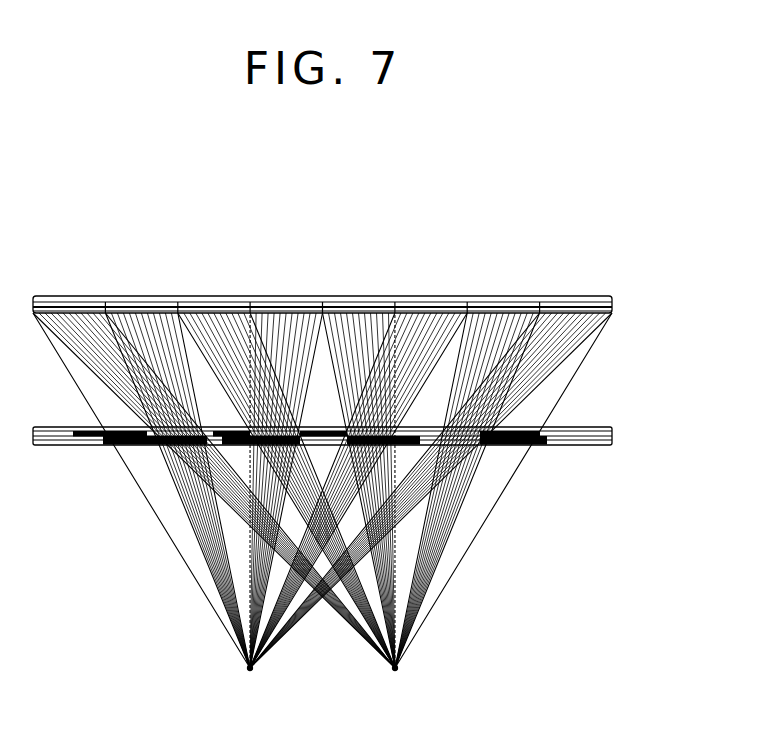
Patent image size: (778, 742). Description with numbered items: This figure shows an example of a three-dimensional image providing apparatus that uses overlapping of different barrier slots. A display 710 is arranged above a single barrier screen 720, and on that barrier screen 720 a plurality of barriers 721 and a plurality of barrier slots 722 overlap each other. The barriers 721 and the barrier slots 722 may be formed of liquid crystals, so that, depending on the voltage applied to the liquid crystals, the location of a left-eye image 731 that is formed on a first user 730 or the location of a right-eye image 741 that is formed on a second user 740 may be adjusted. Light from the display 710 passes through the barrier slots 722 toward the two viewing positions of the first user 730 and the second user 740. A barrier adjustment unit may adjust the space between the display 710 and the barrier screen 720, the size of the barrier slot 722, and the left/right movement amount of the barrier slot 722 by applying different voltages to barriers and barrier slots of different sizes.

The display 710 is at (622, 285).
The barrier screen 720 is at (612, 413).
The barriers 721 is at (108, 447).
The barrier slots 722 is at (190, 447).
The first user 730 is at (240, 687).
The left-eye image 731 is at (142, 262).
The second user 740 is at (406, 687).
The right-eye image 741 is at (70, 262).